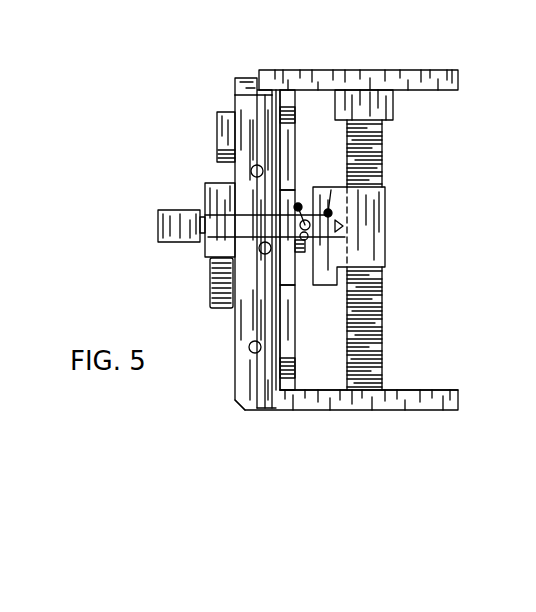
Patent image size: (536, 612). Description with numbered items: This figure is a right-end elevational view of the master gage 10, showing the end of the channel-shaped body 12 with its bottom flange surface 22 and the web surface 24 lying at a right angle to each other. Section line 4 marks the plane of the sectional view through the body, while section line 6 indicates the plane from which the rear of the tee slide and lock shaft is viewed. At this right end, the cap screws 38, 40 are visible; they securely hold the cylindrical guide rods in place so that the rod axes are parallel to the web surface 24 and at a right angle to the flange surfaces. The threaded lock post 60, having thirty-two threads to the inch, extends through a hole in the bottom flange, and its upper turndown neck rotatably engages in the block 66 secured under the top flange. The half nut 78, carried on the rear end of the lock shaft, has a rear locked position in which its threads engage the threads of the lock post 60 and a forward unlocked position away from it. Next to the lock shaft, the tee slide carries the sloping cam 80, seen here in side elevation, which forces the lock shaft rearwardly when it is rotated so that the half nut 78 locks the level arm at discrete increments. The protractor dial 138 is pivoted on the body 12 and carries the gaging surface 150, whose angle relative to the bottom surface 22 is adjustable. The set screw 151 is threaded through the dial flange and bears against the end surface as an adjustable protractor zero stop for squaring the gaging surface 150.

The section line 4- 4 is at (487, 238).
The section line 6- 6 is at (312, 143).
The master gage 10 is at (418, 157).
The body 12 is at (424, 388).
The flange surface 22 is at (405, 69).
The web surface 24 is at (398, 410).
The right end cap screw 38 is at (296, 117).
The right end cap screw 40 is at (297, 372).
The lock post 60 is at (382, 325).
The block 66 is at (393, 108).
The half nut 78 is at (365, 233).
The cam 80 is at (304, 231).
The protractor dial 138 is at (235, 372).
The gaging surface 150 is at (247, 112).
The set screw 151 is at (250, 247).